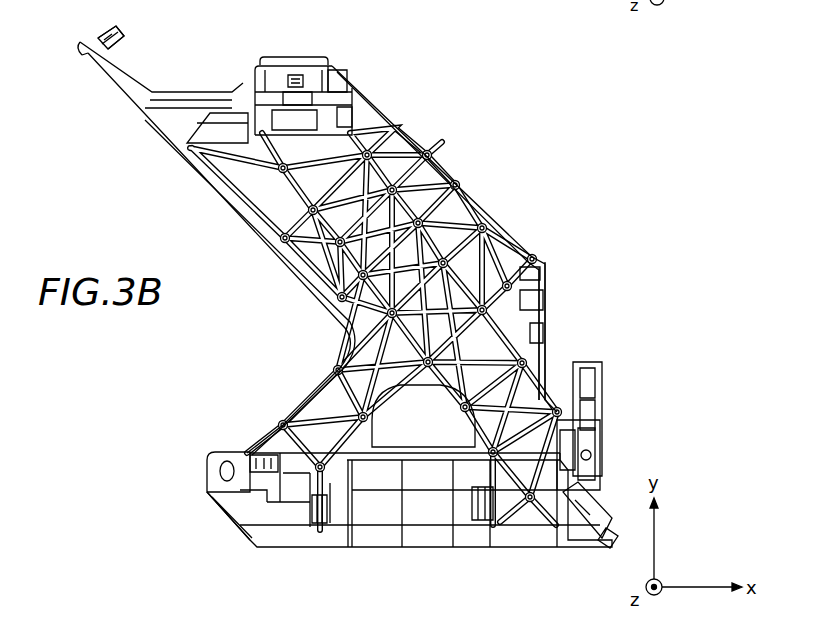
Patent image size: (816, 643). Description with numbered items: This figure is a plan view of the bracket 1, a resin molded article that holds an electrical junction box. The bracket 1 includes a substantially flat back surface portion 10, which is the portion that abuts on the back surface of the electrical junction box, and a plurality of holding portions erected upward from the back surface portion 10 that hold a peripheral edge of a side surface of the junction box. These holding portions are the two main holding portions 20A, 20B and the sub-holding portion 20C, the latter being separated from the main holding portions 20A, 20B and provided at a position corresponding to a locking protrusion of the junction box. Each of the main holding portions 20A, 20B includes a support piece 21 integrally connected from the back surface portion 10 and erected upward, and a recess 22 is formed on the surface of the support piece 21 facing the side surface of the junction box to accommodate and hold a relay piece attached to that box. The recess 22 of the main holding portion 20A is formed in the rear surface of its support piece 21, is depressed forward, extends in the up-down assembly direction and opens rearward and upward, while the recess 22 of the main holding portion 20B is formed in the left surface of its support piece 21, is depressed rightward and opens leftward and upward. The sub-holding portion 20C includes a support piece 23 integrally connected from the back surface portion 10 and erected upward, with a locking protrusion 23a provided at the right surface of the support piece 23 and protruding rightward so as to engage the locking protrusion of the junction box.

The bracket 1 is at (470, 163).
The back surface portion 10 is at (550, 261).
The main holding portion 20A is at (296, 53).
The main holding portion 20B is at (597, 422).
The sub-holding portion 20C is at (243, 447).
The support piece 21 is at (263, 97).
The recess 22 is at (348, 98).
The support piece 23 is at (250, 492).
The locking protrusion 23a is at (272, 455).